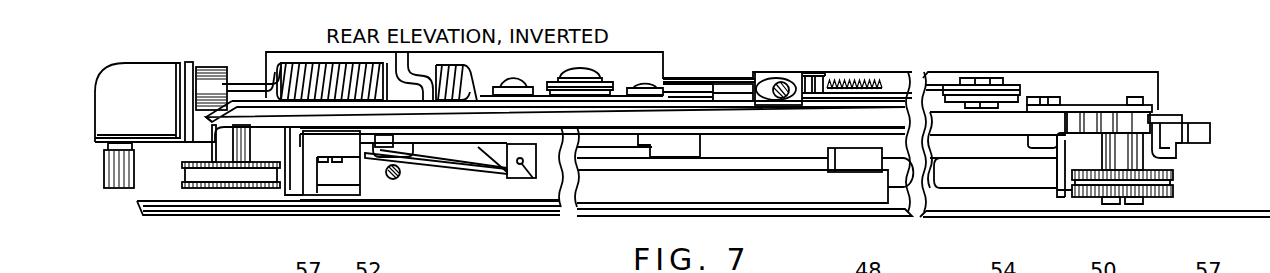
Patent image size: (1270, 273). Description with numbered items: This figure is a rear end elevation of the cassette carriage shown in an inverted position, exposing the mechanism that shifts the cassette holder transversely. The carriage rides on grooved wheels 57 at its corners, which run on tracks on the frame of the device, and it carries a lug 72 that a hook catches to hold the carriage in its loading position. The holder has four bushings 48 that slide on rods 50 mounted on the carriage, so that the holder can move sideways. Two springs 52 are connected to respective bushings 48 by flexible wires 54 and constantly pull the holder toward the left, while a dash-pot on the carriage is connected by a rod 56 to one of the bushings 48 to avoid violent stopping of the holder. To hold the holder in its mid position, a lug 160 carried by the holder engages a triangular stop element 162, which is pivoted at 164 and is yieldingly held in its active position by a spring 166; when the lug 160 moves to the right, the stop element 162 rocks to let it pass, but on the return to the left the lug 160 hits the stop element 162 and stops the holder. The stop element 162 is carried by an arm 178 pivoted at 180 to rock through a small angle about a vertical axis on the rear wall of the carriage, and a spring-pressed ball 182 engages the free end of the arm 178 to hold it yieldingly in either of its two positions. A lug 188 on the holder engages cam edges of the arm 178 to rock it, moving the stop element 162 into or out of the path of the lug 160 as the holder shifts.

The bushing 48 is at (857, 158).
The rod 50 is at (963, 173).
The spring 52 is at (305, 70).
The flexible wire 54 is at (673, 97).
The rod 56 is at (710, 82).
The wheel 57 is at (203, 183).
The lug 72 is at (117, 188).
The lug 160 is at (340, 194).
The stop element 162 is at (528, 180).
The pivot 164 is at (523, 163).
The spring 166 is at (443, 165).
The arm 178 is at (455, 137).
The pivot 180 is at (403, 151).
The spring-pressed ball 182 is at (657, 134).
The lug 188 is at (383, 136).